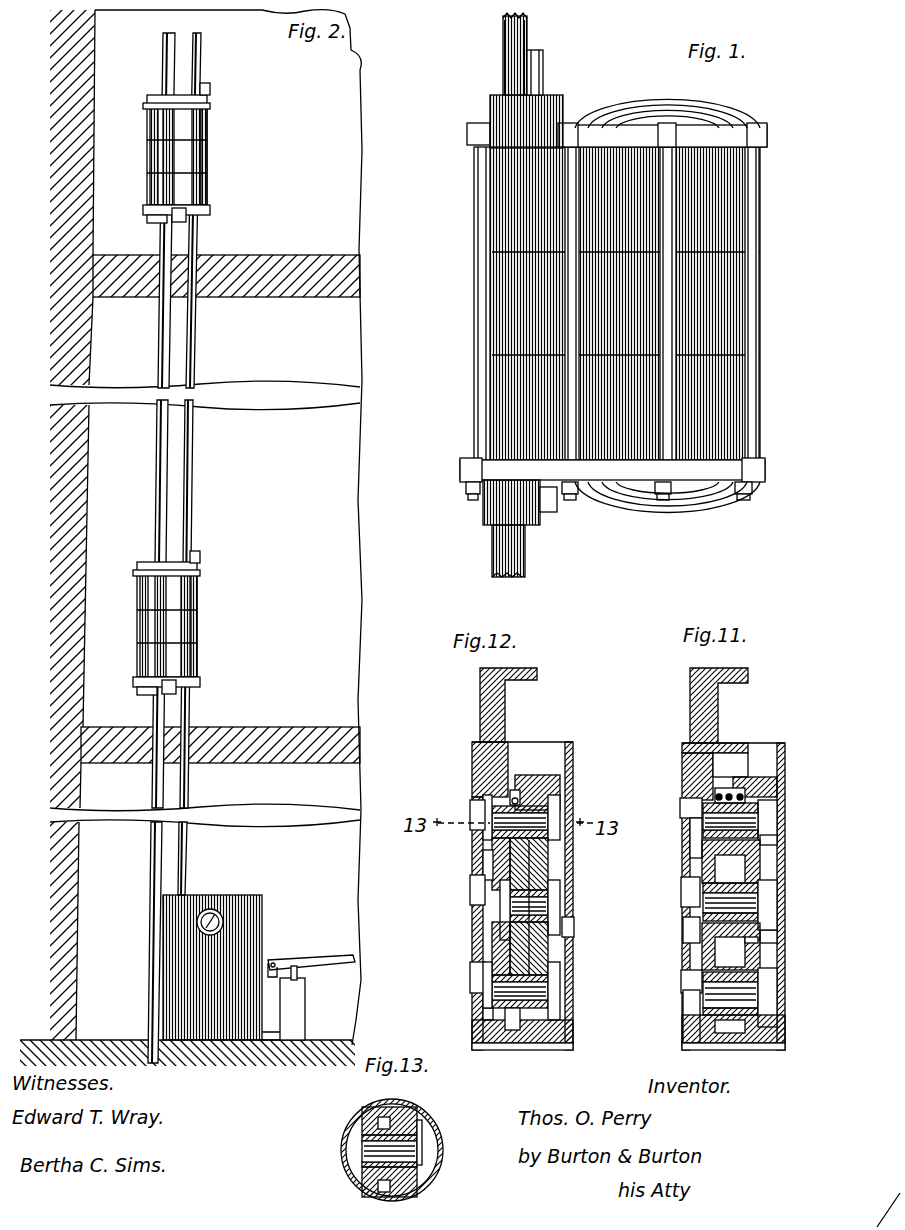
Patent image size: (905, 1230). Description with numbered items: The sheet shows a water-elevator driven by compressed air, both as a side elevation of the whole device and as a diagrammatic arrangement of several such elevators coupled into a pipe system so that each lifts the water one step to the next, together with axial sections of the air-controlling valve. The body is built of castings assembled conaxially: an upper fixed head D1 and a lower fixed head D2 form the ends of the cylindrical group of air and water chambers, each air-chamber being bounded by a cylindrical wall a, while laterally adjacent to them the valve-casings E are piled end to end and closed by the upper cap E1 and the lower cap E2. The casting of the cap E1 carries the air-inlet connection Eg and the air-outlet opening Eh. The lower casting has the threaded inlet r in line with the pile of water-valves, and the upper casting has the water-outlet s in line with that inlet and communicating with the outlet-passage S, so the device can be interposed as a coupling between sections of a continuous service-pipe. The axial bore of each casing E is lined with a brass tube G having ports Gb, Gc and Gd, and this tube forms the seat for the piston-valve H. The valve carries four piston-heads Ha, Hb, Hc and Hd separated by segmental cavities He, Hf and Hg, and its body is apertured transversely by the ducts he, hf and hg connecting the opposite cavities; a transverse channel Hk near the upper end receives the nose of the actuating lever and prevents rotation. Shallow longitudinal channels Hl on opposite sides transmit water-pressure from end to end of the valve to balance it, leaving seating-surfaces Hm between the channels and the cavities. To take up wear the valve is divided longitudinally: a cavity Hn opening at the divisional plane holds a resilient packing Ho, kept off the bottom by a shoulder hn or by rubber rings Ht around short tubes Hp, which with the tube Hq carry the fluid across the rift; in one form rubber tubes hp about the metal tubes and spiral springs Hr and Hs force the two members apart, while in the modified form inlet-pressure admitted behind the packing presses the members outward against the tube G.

In FIG. 2, the water-outlet s is at (165, 92).
In FIG. 1, the water-outlet s is at (504, 29).
In FIG. 1, the outlet-passage S is at (490, 301).
In FIG. 1, the cylindrical wall of the air-chamber a is at (728, 212).
In FIG. 1, the upper fixed head D1 is at (688, 112).
In FIG. 2, the lower fixed head D2 is at (183, 222).
In FIG. 1, the lower fixed head D2 is at (684, 503).
In FIG. 2, the valve-casing E is at (207, 158).
In FIG. 1, the valve-casing E is at (505, 212).
In FIG. 2, the upper cap of the valve-casings E1 is at (208, 106).
In FIG. 1, the upper cap of the valve-casings E1 is at (503, 134).
In FIG. 2, the lower cap of the valve-casings E2 is at (211, 212).
In FIG. 1, the lower cap of the valve-casings E2 is at (530, 475).
In FIG. 2, the air-inlet connection Eg is at (203, 56).
In FIG. 1, the air-inlet connection Eg is at (514, 73).
In FIG. 2, the air-outlet opening Eh is at (210, 88).
In FIG. 1, the air-outlet opening Eh is at (544, 77).
In FIG. 2, the threaded inlet r is at (162, 222).
In FIG. 1, the threaded inlet r is at (526, 522).
In FIG. 12, the transverse channel Hk is at (518, 690).
In FIG. 11, the transverse channel Hk is at (727, 690).
In FIG. 12, the cavity Hn is at (513, 792).
In FIG. 11, the cavity Hn is at (742, 786).
In FIG. 13, the cavity Hn is at (380, 1115).
In FIG. 12, the shoulder and shallow chamber hn is at (520, 797).
In FIG. 13, the shoulder and shallow chamber hn is at (389, 1112).
In FIG. 12, the lining-tube G is at (574, 744).
In FIG. 11, the lining-tube G is at (762, 746).
In FIG. 12, the packing Ho is at (574, 777).
In FIG. 13, the packing Ho is at (421, 1133).
In FIG. 12, the piston-head Ha is at (575, 782).
In FIG. 11, the piston-head Ha is at (778, 783).
In FIG. 12, the segmental cavity He is at (488, 827).
In FIG. 11, the segmental cavity He is at (692, 843).
In FIG. 13, the segmental cavity He is at (352, 1157).
In FIG. 12, the transverse aperture he is at (500, 806).
In FIG. 13, the transverse aperture he is at (362, 1138).
In FIG. 12, the port Gb is at (470, 806).
In FIG. 11, the port Gb is at (682, 808).
In FIG. 12, the short tube Hp is at (494, 831).
In FIG. 11, the short tube Hp is at (760, 827).
In FIG. 13, the short tube Hp is at (405, 1168).
In FIG. 12, the rubber ring Ht is at (498, 858).
In FIG. 13, the rubber ring Ht is at (365, 1125).
In FIG. 12, the port Gd is at (567, 845).
In FIG. 11, the port Gd is at (774, 840).
In FIG. 12, the piston-head Hb is at (572, 868).
In FIG. 11, the piston-head Hb is at (692, 867).
In FIG. 12, the port Gc is at (477, 893).
In FIG. 11, the port Gc is at (693, 897).
In FIG. 12, the transverse aperture hf is at (500, 902).
In FIG. 12, the segmental cavity Hf is at (562, 903).
In FIG. 11, the segmental cavity Hf is at (778, 890).
In FIG. 12, the short tube Hq is at (512, 920).
In FIG. 12, the piston-head Hc is at (570, 953).
In FIG. 11, the piston-head Hc is at (692, 955).
In FIG. 12, the segmental cavity Hg is at (572, 976).
In FIG. 11, the segmental cavity Hg is at (712, 1013).
In FIG. 12, the transverse aperture hg is at (546, 994).
In FIG. 11, the transverse aperture hg is at (763, 882).
In FIG. 12, the piston-head Hd is at (572, 1027).
In FIG. 11, the piston-head Hd is at (767, 1042).
In FIG. 12, the piston-valve H is at (508, 1022).
In FIG. 11, the spiral spring Hr is at (745, 790).
In FIG. 11, the rubber tube hp is at (773, 807).
In FIG. 11, the spiral spring Hs is at (758, 941).
In FIG. 13, the seating-surface Hm is at (362, 1125).
In FIG. 13, the longitudinal channel Hl is at (405, 1113).